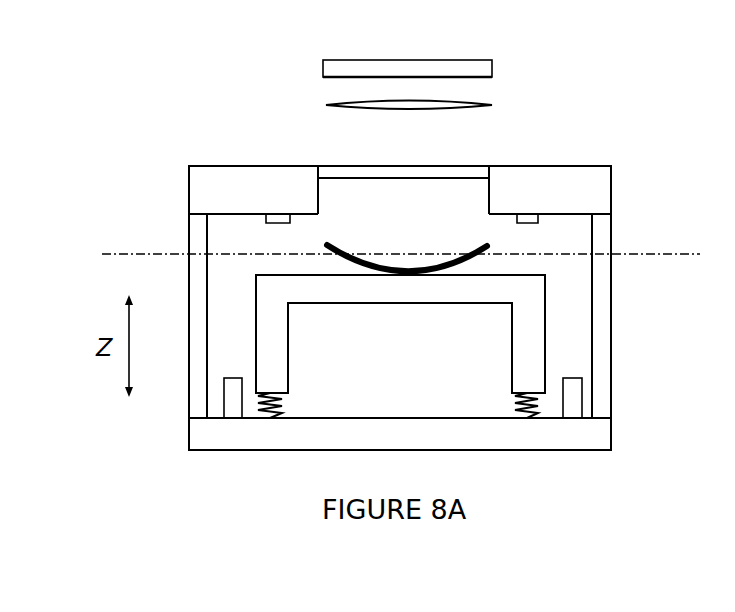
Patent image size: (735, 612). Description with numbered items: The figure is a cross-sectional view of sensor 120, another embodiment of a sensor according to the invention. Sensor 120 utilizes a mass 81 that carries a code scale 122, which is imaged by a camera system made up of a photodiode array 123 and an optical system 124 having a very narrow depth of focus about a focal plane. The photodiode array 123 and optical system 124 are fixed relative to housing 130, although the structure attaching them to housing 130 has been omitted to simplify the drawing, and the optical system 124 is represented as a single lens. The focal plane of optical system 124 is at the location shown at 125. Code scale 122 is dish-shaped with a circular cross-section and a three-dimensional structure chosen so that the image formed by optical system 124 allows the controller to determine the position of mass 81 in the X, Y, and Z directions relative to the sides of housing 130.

The sensor 120 is at (131, 149).
The code scale 122 is at (362, 272).
The photodiode array 123 is at (492, 68).
The optical system 124 is at (492, 105).
The focal plane 125 is at (667, 255).
The housing 130 is at (600, 176).
The mass 81 is at (478, 299).